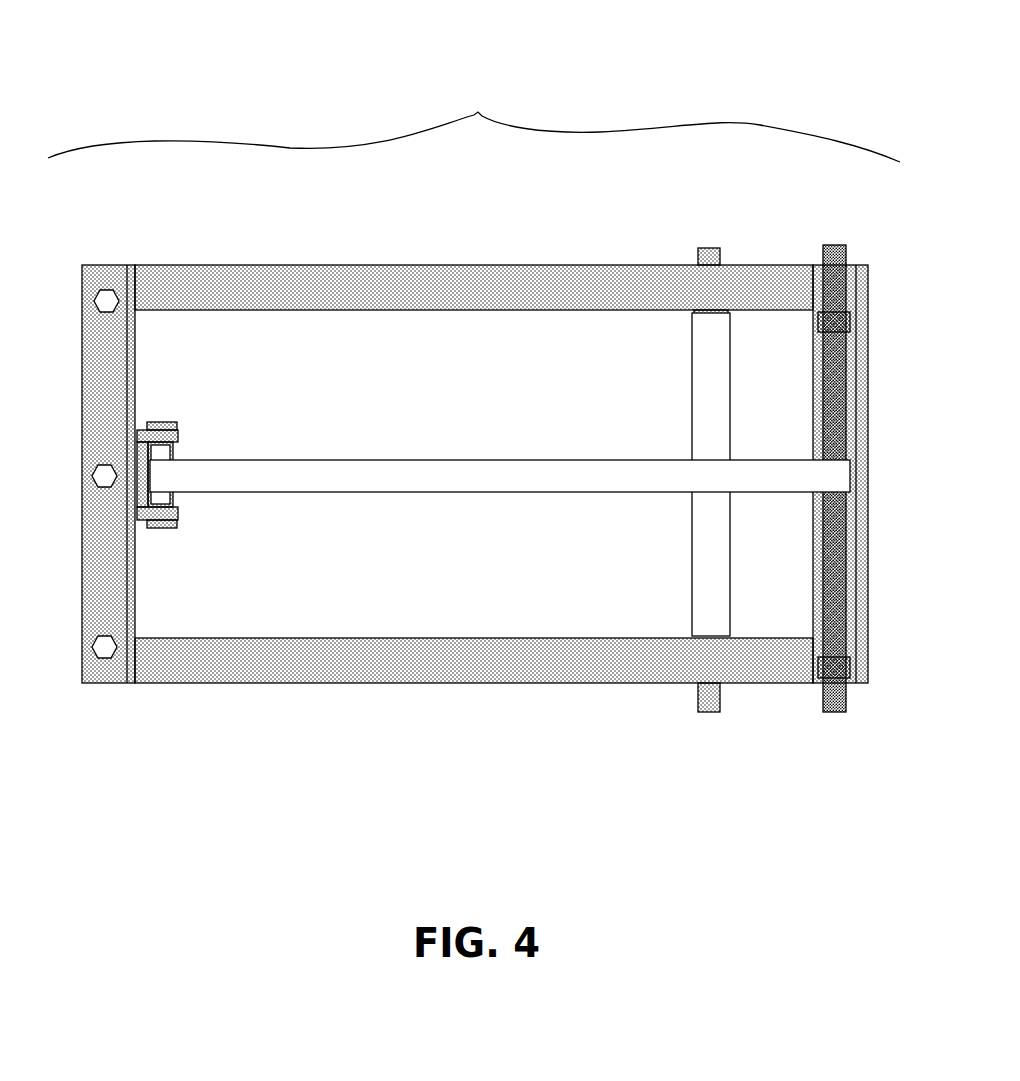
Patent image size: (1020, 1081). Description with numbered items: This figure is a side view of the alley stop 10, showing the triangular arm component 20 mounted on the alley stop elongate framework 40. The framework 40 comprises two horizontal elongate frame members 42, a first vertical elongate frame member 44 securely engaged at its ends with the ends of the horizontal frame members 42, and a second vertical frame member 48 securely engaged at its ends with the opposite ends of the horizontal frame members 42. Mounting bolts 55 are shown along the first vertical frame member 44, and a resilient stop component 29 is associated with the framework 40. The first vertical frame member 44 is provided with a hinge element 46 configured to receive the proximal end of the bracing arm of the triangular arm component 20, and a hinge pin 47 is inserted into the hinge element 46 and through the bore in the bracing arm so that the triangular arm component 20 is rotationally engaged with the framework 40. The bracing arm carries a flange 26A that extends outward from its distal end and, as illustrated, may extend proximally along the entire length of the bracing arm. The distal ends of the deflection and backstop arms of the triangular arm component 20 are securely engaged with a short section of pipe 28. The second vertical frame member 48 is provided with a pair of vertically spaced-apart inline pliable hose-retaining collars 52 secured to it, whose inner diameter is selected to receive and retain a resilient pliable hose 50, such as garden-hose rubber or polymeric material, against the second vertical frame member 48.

The alley stop 10 is at (474, 112).
The triangular arm component 20 is at (563, 535).
The bracing arm flange 26A is at (812, 480).
The pipe 28 is at (693, 385).
The resilient stop component 29 is at (698, 258).
The alley stop framework 40 is at (262, 716).
The horizontal frame member 42 is at (418, 265).
The first vertical elongate frame member 44 is at (82, 593).
The hinge element 46 is at (153, 522).
The hinge pin 47 is at (162, 425).
The second vertical frame member 48 is at (866, 470).
The resilient pliable hose 50 is at (846, 578).
The hose-retaining collars 52 is at (852, 327).
The mounting bolts 55 is at (97, 307).